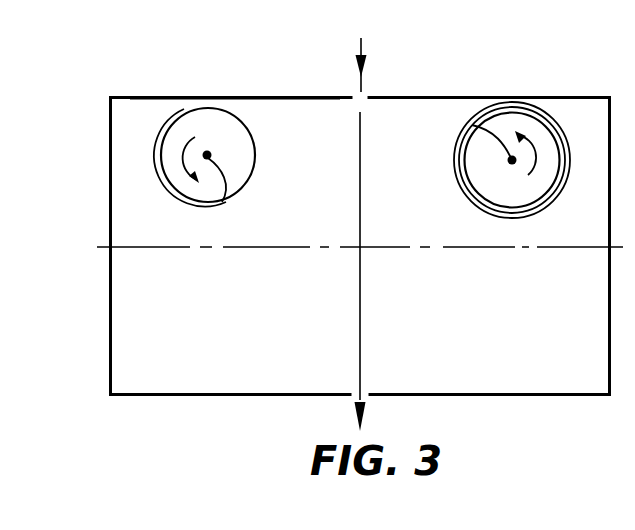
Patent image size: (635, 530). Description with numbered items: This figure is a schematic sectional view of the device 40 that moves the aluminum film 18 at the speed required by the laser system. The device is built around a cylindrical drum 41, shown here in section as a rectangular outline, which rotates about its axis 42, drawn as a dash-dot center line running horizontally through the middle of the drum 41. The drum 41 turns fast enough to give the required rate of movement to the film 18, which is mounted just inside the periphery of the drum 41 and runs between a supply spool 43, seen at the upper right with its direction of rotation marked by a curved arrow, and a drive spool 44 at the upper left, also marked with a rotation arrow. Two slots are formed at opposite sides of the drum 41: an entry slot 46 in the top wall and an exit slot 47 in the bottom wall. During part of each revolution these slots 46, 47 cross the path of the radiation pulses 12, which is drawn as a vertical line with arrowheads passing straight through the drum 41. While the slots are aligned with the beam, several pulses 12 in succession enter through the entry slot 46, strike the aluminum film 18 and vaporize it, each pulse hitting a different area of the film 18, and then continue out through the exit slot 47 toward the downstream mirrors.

The housing 40 is at (195, 60).
The film 18 is at (267, 103).
The radiation pulses 12 is at (362, 50).
The entry slot 46 is at (362, 90).
The exit slot 47 is at (363, 398).
The drive spool 44 is at (237, 172).
The supply spool 43 is at (490, 180).
The axis 42 is at (147, 252).
The cylindrical drum 41 is at (523, 360).